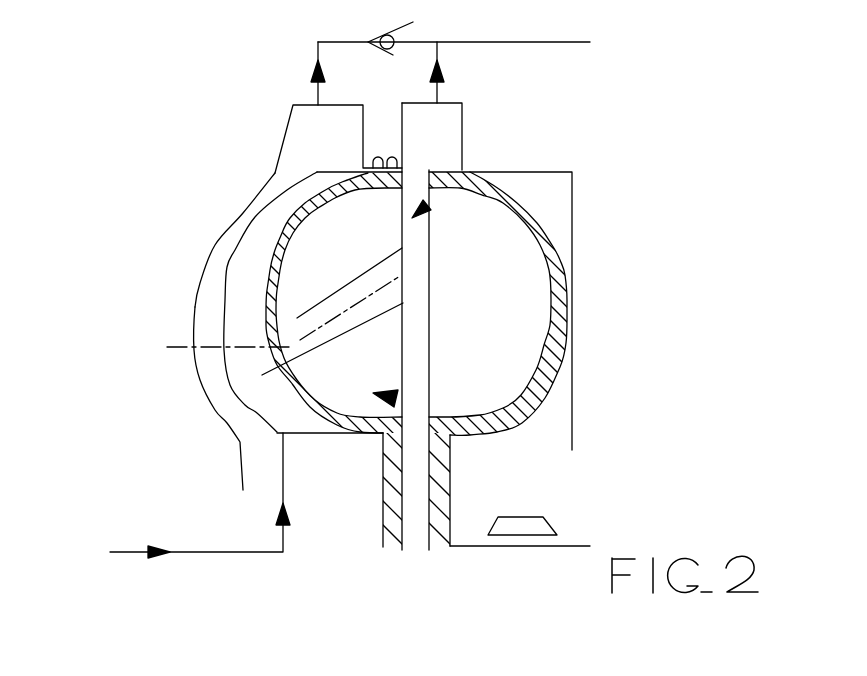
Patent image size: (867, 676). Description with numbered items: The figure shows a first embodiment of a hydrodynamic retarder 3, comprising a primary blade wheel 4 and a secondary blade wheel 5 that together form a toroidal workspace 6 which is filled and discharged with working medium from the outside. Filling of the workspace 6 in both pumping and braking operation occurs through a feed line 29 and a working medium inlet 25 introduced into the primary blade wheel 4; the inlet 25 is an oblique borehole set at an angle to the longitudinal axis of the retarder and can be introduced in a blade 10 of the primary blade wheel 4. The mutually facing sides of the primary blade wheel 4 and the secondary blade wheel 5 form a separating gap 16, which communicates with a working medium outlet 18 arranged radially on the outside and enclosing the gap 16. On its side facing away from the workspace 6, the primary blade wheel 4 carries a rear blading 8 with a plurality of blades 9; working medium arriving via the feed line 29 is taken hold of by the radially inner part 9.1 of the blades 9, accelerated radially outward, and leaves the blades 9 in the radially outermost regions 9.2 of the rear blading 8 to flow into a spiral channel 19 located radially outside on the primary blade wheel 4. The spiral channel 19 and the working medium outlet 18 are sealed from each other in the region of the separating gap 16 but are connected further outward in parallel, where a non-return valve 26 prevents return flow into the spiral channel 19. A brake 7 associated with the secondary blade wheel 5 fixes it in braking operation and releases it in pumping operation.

The hydrodynamic retarder 3 is at (640, 140).
The primary blade wheel 4 is at (390, 528).
The secondary blade wheel 5 is at (517, 397).
The workspace 6 is at (482, 275).
The brake 7 is at (542, 518).
The rear blading 8 is at (273, 223).
The blades 9 is at (433, 359).
The radially inner part 9.1 is at (268, 402).
The radially outermost regions 9.2 is at (235, 282).
The blade 10 is at (497, 378).
The separating gap 16 is at (412, 218).
The working medium outlet 18 is at (446, 141).
The spiral channel 19 is at (343, 143).
The working medium inlet 25 is at (298, 325).
The non-return valve 26 is at (411, 27).
The feed line 29 is at (228, 553).